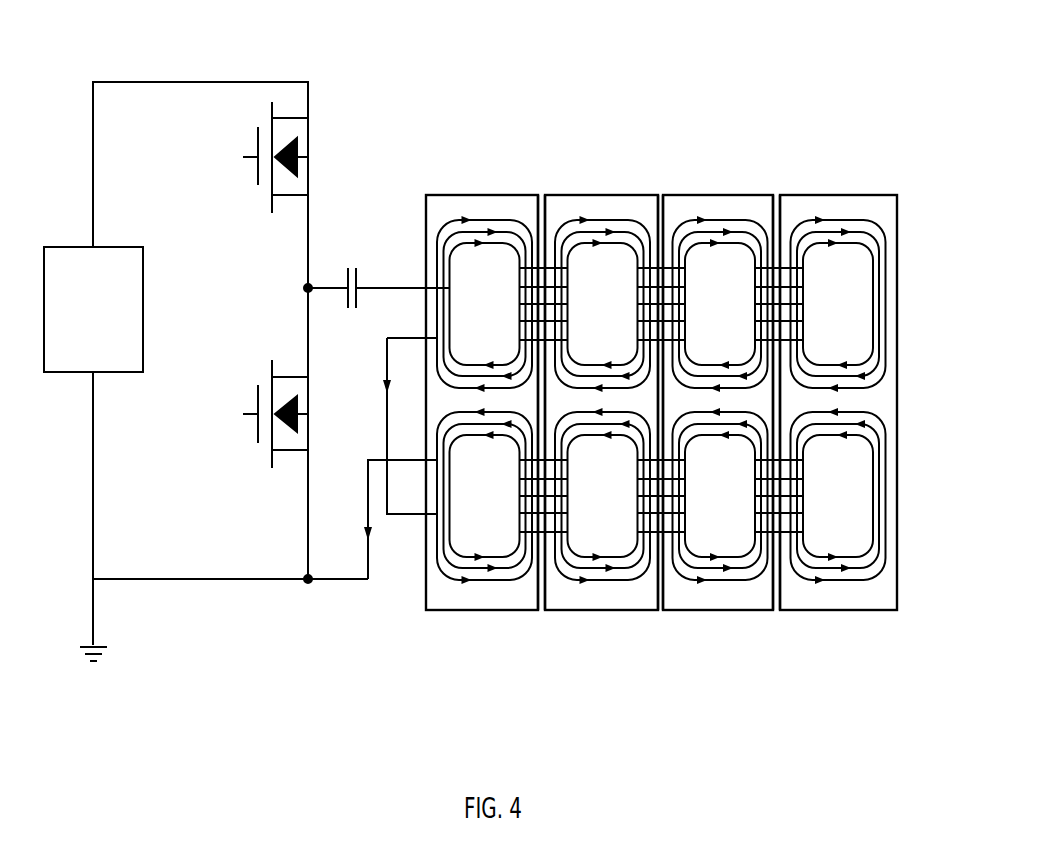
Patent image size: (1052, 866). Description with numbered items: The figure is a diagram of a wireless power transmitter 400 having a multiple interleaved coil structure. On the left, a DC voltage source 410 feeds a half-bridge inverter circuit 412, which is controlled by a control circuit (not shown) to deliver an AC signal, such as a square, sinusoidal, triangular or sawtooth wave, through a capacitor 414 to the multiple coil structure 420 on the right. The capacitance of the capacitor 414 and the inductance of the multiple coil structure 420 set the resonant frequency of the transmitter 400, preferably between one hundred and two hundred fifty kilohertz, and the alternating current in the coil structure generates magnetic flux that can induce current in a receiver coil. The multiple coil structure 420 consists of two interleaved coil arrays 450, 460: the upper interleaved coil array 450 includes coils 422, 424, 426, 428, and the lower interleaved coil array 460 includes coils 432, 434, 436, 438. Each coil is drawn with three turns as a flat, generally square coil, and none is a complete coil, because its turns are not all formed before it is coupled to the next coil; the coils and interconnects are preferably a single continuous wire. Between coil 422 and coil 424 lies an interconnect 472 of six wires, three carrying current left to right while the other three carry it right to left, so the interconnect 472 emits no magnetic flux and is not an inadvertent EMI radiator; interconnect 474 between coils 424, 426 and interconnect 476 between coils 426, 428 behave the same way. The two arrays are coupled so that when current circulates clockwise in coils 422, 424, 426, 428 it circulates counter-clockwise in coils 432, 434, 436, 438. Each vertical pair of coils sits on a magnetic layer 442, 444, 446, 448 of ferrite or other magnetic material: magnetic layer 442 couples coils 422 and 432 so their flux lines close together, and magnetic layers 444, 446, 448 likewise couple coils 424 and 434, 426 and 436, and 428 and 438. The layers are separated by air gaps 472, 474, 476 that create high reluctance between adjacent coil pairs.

The wireless power transmitter 400 is at (453, 92).
The DC voltage source 410 is at (69, 244).
The half-bridge inverter circuit 412 is at (237, 230).
The capacitor 414 is at (352, 266).
The multiple coil structure 420 is at (710, 737).
The coil 422 is at (455, 205).
The coil 424 is at (590, 205).
The coil 426 is at (713, 205).
The coil 428 is at (813, 205).
The coil 432 is at (490, 612).
The coil 434 is at (630, 612).
The coil 436 is at (725, 612).
The coil 438 is at (845, 612).
The magnetic layer 442 is at (455, 612).
The magnetic layer 444 is at (572, 612).
The magnetic layer 446 is at (685, 612).
The magnetic layer 448 is at (808, 612).
The interleaved coil array 450 is at (916, 299).
The interleaved coil array 460 is at (916, 497).
The interconnect / air gap 472 is at (540, 178).
The interconnect / air gap 474 is at (658, 178).
The interconnect / air gap 476 is at (782, 178).